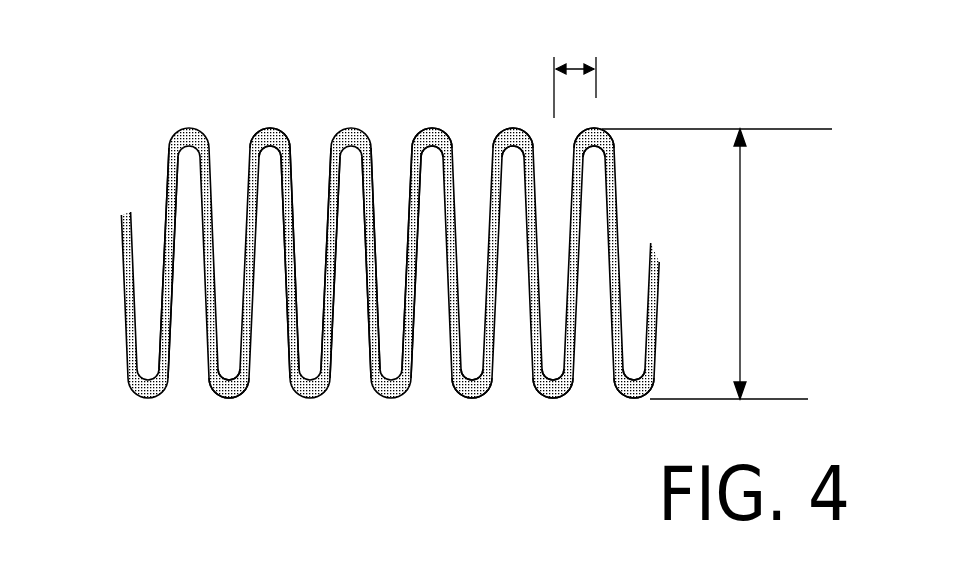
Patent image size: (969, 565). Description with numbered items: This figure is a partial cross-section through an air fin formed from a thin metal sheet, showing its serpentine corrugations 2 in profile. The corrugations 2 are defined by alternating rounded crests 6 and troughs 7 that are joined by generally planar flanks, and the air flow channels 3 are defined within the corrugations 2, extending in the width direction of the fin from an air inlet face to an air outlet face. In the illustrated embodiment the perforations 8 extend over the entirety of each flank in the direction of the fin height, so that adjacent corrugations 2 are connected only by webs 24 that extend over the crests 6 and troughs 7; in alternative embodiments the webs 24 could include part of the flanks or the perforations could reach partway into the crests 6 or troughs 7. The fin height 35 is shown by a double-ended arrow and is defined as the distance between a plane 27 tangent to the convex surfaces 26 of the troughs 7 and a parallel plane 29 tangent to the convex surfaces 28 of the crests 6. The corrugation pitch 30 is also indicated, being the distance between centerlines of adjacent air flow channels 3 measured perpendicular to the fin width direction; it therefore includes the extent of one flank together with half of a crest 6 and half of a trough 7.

The corrugations 2 is at (175, 102).
The air flow channels 3 is at (307, 158).
The crests 6 is at (515, 127).
The troughs 7 is at (537, 400).
The perforations 8 is at (170, 207).
The webs 24 is at (269, 135).
The convex surfaces of the troughs 26 is at (633, 400).
The plane tangent to convex surfaces of the troughs 27 is at (747, 392).
The convex surfaces of the crests 28 is at (594, 127).
The plane tangent to convex surfaces of the crests 29 is at (735, 127).
The corrugation pitch 30 is at (578, 65).
The fin height 35 is at (742, 253).